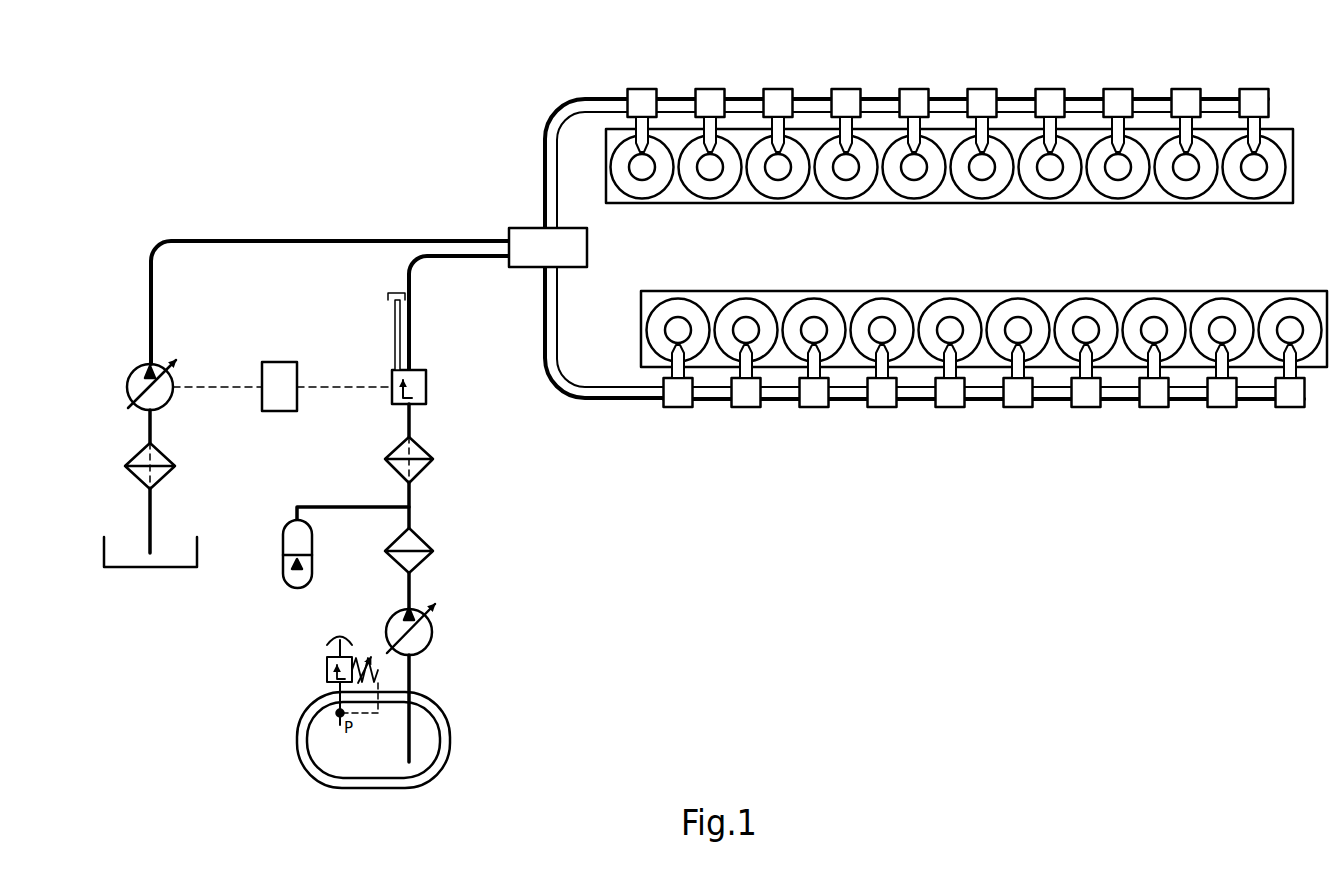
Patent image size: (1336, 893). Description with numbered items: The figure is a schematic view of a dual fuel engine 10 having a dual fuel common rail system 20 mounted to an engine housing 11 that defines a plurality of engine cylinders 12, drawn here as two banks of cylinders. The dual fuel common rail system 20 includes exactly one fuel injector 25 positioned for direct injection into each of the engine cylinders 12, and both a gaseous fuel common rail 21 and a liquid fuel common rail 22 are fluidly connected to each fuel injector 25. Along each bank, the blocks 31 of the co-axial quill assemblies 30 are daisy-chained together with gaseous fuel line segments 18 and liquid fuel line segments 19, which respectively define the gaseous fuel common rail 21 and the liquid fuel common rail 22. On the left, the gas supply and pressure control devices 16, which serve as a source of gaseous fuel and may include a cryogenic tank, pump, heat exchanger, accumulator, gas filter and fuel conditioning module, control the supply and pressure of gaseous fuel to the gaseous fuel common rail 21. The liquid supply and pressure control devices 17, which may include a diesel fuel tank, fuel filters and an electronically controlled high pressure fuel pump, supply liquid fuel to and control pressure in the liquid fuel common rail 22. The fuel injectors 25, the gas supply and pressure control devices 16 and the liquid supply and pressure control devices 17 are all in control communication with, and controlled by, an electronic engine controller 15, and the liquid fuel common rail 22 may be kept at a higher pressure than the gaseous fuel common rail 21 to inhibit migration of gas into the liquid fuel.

The dual fuel engine 10 is at (960, 261).
The engine housing 11 is at (685, 204).
The engine cylinders 12 is at (758, 190).
The electronic engine controller 15 is at (280, 362).
The gas supply and pressure control devices 16 is at (273, 520).
The liquid supply and pressure control devices 17 is at (113, 360).
The gaseous fuel line segments 18 is at (1012, 113).
The liquid fuel line segments 19 is at (1085, 97).
The dual fuel common rail system 20 is at (955, 67).
The gaseous fuel common rail 21 is at (812, 108).
The liquid fuel common rail 22 is at (1012, 110).
The fuel injector 25 is at (858, 172).
The co-axial quill assemblies 30 is at (914, 84).
The blocks 31 is at (776, 88).